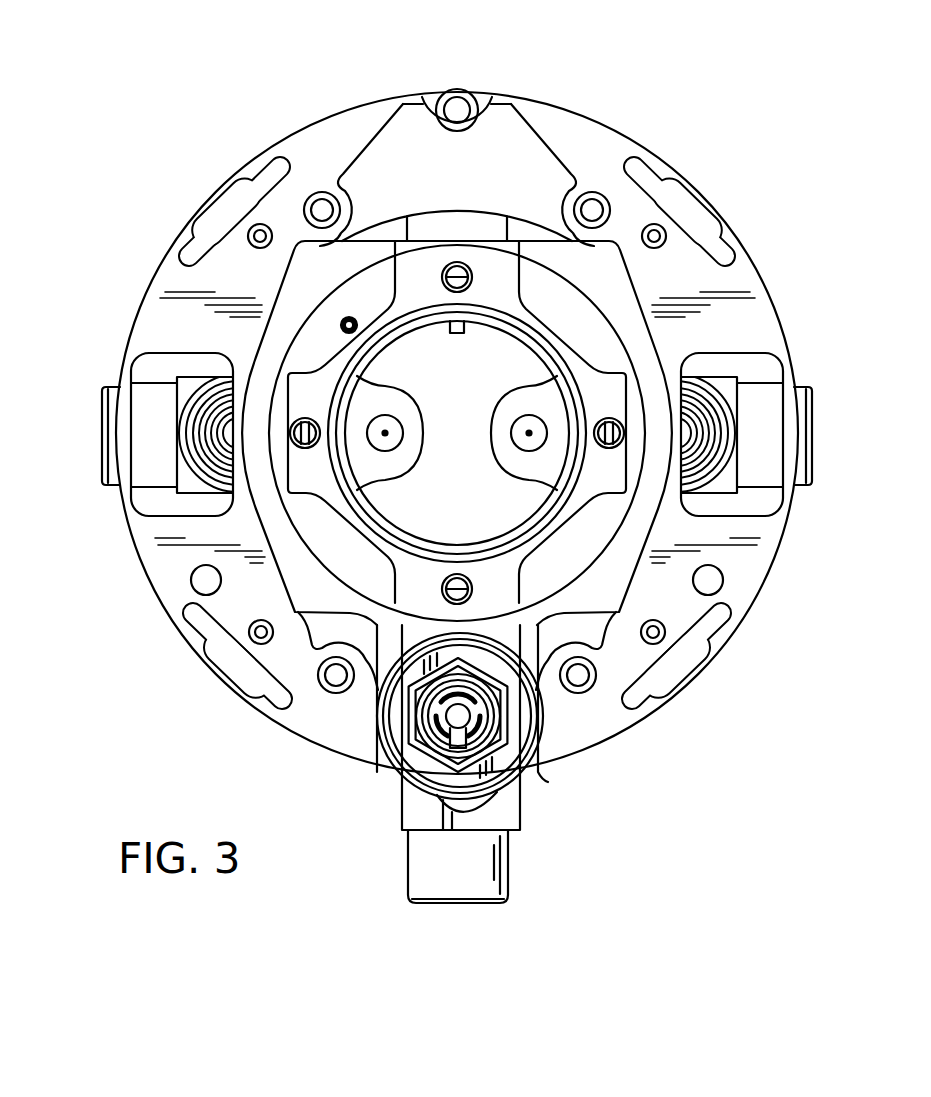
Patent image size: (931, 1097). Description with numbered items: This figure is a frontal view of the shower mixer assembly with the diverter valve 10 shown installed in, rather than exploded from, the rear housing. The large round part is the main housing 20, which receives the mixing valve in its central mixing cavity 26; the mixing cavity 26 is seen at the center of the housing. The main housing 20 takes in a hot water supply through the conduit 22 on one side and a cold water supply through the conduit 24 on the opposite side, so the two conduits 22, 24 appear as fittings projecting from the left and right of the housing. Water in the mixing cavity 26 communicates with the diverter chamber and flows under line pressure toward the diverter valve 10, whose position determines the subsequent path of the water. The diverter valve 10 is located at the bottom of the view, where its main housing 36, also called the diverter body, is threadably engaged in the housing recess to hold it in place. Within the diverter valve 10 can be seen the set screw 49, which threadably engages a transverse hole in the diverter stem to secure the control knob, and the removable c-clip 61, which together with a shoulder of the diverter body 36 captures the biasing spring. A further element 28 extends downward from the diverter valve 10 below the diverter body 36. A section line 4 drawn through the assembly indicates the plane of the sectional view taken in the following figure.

The section line for FIG. 4 is at (485, 14).
The diverter valve 10 is at (548, 780).
The main housing 20 is at (292, 116).
The conduit 22 is at (100, 432).
The conduit 24 is at (815, 432).
The mixing cavity 26 is at (478, 449).
The stem 28 is at (490, 905).
The main housing of the diverter valve 36 is at (392, 776).
The set screw 49 is at (410, 730).
The removable c-clip 61 is at (483, 707).